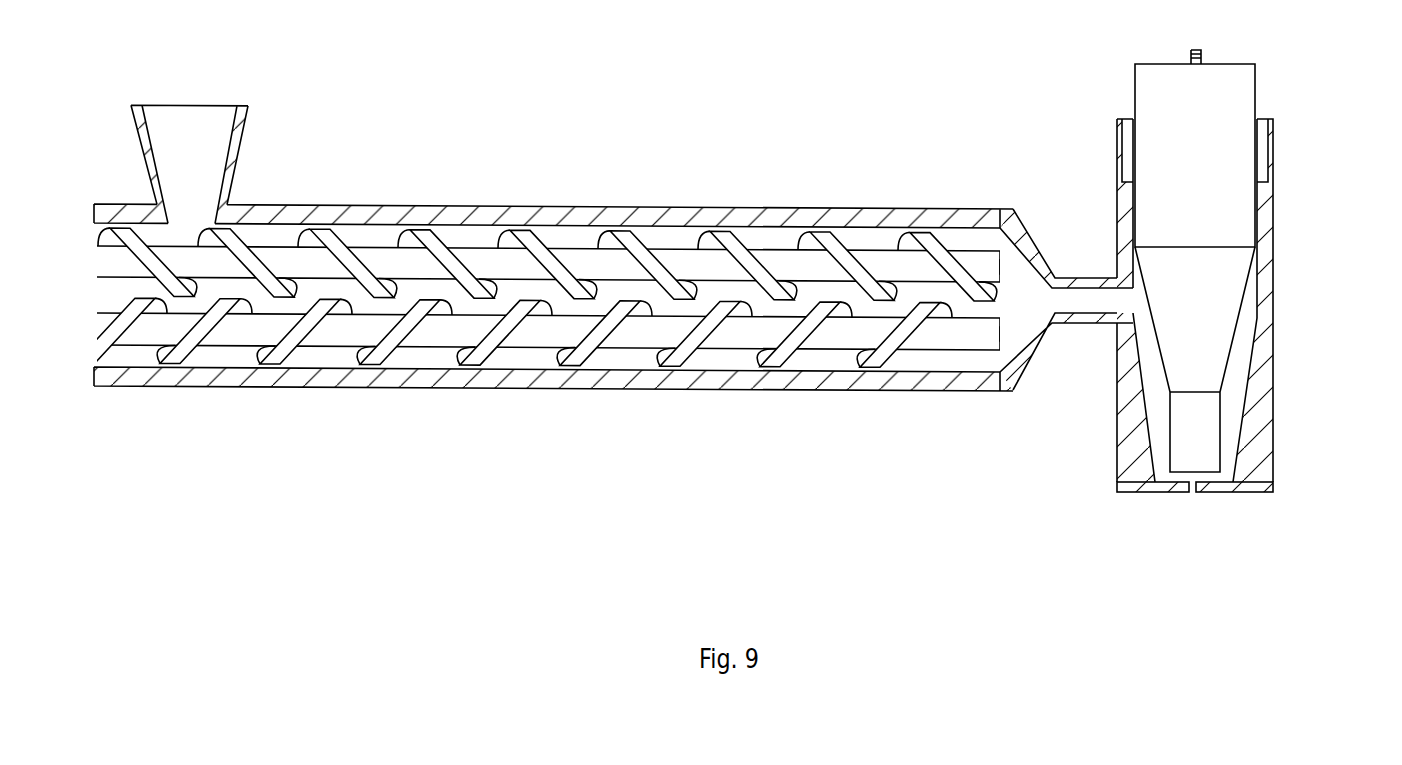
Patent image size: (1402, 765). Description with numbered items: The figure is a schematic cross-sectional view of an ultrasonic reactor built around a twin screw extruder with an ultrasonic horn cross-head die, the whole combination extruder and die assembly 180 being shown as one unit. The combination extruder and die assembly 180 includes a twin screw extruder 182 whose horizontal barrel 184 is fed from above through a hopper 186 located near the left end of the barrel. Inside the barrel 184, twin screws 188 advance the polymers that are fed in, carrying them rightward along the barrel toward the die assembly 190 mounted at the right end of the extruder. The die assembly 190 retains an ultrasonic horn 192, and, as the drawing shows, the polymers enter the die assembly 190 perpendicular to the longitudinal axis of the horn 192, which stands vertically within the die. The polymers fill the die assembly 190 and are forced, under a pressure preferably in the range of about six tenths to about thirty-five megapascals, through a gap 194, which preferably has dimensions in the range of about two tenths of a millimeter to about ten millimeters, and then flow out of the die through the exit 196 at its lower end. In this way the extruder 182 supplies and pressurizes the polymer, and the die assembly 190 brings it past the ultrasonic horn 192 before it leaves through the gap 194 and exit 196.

The combination extruder and die assembly 180 is at (602, 235).
The twin screw extruder 182 is at (553, 379).
The barrel 184 is at (553, 216).
The hopper 186 is at (189, 164).
The twin screws 188 is at (545, 298).
The die assembly 190 is at (1255, 338).
The ultrasonic horn 192 is at (1215, 211).
The gap 194 is at (1182, 482).
The exit 196 is at (1195, 488).